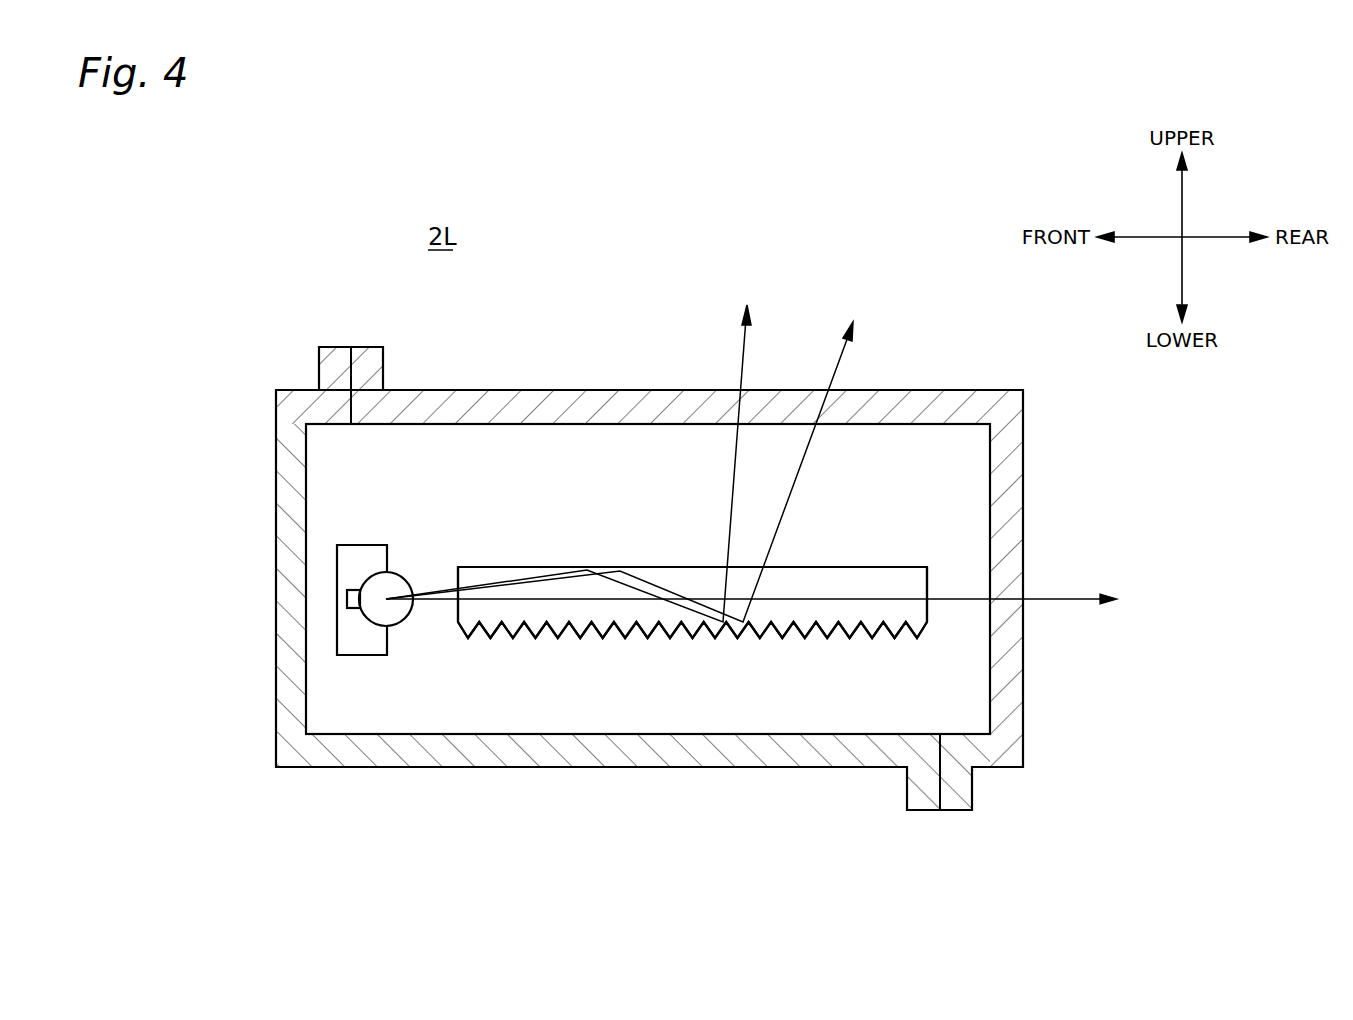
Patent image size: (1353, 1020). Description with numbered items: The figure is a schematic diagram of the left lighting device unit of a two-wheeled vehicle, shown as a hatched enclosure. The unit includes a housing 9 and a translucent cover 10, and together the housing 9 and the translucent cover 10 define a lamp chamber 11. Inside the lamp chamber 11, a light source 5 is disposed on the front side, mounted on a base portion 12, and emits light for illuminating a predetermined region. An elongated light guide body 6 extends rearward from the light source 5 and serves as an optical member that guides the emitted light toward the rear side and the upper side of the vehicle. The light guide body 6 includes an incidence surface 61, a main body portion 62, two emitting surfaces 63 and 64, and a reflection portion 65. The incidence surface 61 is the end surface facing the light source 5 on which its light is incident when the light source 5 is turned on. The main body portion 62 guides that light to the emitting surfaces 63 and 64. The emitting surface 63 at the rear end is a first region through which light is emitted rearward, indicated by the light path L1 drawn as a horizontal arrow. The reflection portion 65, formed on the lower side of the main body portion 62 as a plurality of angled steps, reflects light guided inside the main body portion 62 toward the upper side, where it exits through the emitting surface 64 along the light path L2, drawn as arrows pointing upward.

The light source 5 is at (404, 572).
The light guide body 6 is at (497, 567).
The housing 9 is at (276, 637).
The translucent cover 10 is at (503, 390).
The lamp chamber 11 is at (915, 443).
The base portion 12 is at (358, 655).
The incidence surface 61 is at (457, 612).
The main body portion 62 is at (862, 575).
The emitting surface 63 is at (928, 580).
The emitting surface 64 is at (690, 567).
The reflection portion 65 is at (837, 638).
The light path L1 is at (1078, 600).
The light path L2 is at (741, 357).